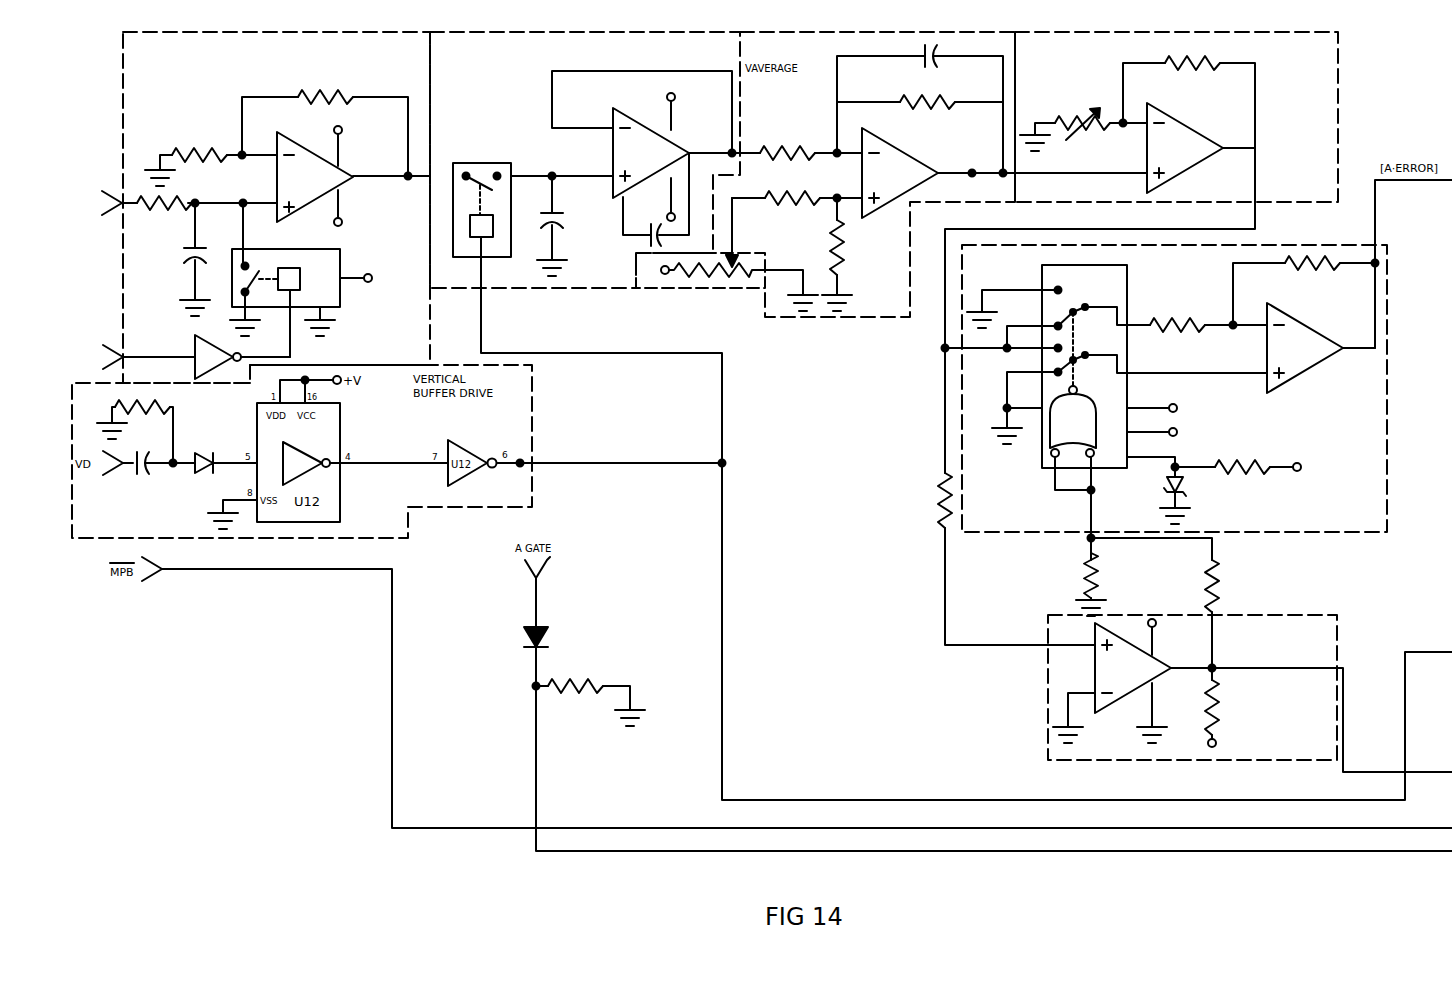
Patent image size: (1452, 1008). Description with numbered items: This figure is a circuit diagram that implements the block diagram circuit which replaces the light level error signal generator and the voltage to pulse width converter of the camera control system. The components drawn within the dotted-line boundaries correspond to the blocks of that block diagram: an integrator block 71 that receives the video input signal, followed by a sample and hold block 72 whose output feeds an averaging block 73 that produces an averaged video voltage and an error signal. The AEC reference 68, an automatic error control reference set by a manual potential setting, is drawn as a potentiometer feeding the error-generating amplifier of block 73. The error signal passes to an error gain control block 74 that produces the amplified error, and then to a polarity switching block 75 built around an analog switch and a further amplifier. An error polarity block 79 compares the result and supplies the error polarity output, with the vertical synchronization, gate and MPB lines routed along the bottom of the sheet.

The integrator block 71 is at (183, 84).
The sample and hold block 72 is at (493, 82).
The averaging block 73 is at (800, 121).
The error gain control block 74 is at (1075, 79).
The polarity switching block 75 is at (1343, 432).
The error polarity block 79 is at (1293, 732).
The AEC reference 68 is at (686, 288).